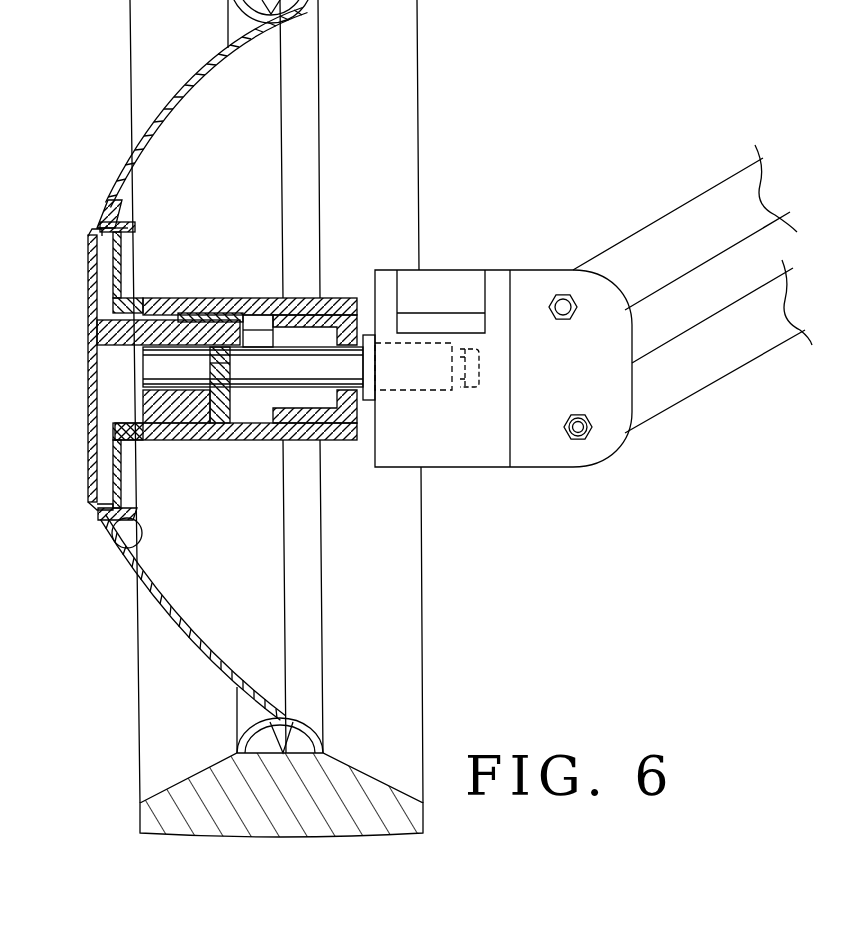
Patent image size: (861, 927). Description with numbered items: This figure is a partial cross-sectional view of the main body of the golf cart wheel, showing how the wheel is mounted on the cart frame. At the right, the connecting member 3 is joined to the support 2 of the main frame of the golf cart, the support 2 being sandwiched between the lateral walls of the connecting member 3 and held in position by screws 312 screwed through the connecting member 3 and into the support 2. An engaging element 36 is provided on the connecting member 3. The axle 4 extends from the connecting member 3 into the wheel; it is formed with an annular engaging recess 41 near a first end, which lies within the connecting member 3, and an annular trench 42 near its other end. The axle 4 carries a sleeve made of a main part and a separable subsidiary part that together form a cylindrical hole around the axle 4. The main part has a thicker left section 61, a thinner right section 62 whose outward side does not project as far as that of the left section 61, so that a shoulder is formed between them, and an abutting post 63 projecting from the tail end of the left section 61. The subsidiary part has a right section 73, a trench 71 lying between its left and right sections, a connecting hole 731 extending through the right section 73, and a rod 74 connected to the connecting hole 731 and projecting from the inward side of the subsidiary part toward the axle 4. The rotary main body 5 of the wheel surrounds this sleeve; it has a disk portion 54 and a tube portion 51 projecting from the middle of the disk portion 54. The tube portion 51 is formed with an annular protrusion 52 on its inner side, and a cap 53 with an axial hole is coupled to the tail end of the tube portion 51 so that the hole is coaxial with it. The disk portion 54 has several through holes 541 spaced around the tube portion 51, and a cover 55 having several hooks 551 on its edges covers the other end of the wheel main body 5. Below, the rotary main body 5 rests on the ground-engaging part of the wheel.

The support 2 is at (645, 238).
The connecting member 3 is at (538, 268).
The engaging element 36 is at (445, 297).
The screws 312 is at (578, 427).
The axle 4 is at (313, 373).
The annular engaging recess 41 is at (458, 392).
The annular trench 42 is at (213, 320).
The rotary main body 5 is at (293, 812).
The tube portion 51 is at (300, 297).
The annular protrusion 52 is at (222, 312).
The cap 53 is at (363, 322).
The disk portion 54 is at (170, 622).
The through holes 541 is at (103, 533).
The hooks 551 is at (135, 550).
The cover 55 is at (88, 410).
The left section 61 is at (120, 265).
The right section 62 is at (240, 320).
The abutting post 63 is at (118, 340).
The trench 71 is at (190, 420).
The right section 73 is at (237, 437).
The connecting hole 731 is at (283, 438).
The rod 74 is at (215, 423).